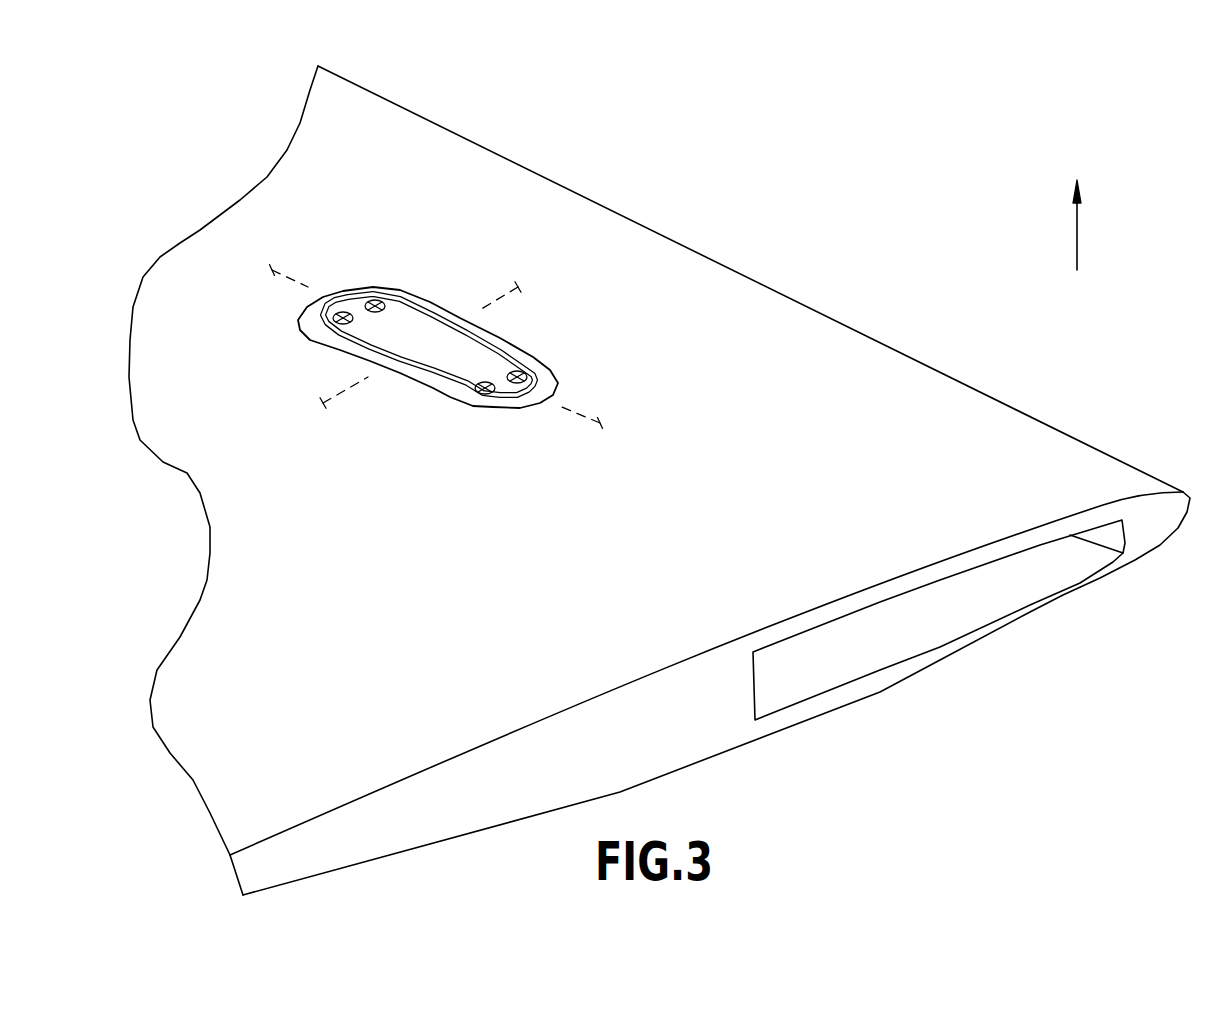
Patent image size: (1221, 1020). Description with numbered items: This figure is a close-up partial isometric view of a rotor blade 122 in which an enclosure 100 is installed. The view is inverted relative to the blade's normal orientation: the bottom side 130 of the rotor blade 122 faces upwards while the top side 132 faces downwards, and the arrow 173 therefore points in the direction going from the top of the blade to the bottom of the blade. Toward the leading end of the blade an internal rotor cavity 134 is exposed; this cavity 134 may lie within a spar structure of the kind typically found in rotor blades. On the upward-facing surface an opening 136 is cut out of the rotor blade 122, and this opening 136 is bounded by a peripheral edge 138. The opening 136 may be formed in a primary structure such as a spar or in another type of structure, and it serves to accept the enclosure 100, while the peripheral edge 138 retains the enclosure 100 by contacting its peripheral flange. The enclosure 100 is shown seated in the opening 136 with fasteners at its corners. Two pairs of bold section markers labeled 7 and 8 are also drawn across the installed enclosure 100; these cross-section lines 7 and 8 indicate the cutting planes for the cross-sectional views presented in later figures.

The enclosure 100 is at (467, 268).
The rotor blade 122 is at (790, 332).
The bottom side 130 is at (920, 398).
The top side 132 is at (857, 698).
The internal rotor cavity 134 is at (1072, 558).
The opening 136 is at (563, 372).
The peripheral edge 138 is at (423, 298).
The direction arrow 173 is at (1078, 243).
The cross-section line 7- 7 is at (272, 270).
The cross-section line 8- 8 is at (518, 287).